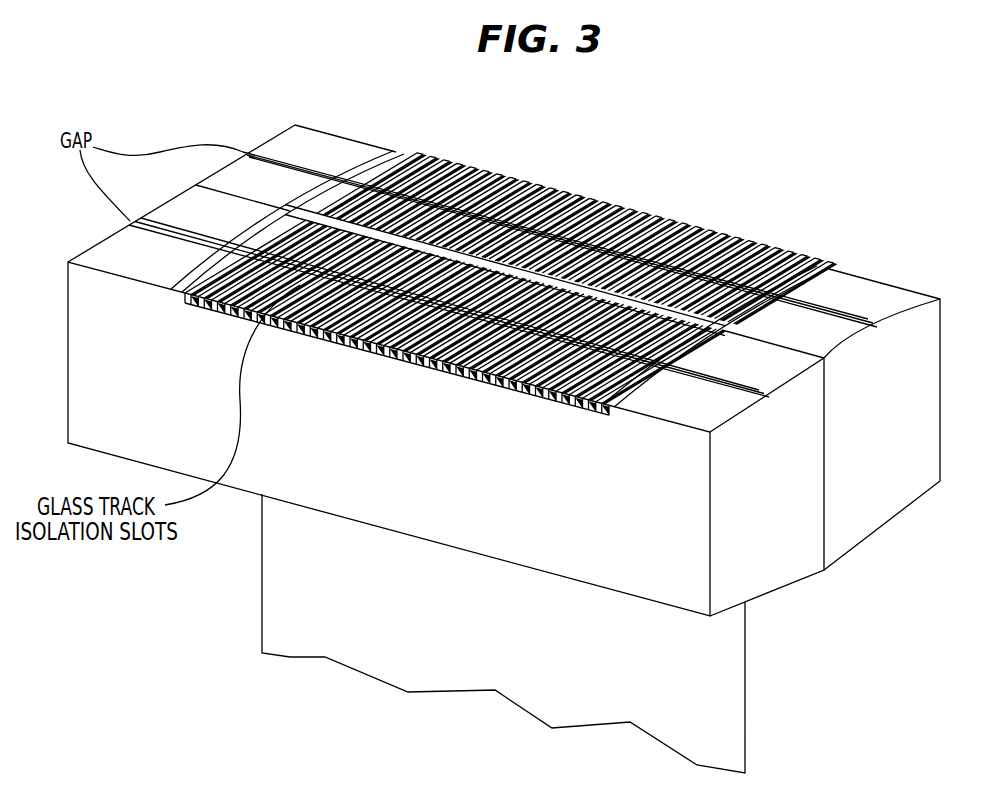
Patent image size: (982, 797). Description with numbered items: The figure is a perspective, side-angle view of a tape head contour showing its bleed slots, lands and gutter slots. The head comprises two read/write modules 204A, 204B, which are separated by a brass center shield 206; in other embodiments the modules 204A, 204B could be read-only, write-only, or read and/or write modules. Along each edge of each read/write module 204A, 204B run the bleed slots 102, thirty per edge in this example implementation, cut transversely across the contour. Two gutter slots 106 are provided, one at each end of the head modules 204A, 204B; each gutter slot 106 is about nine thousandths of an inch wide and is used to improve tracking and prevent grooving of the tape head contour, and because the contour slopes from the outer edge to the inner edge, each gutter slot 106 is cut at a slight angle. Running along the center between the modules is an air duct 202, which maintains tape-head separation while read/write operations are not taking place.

The bleed slots 102 is at (183, 299).
The gutter slots 106 is at (395, 163).
The air duct 202 is at (522, 272).
The read/write module 204A is at (622, 550).
The read/write module 204B is at (856, 504).
The brass center shield 206 is at (746, 709).